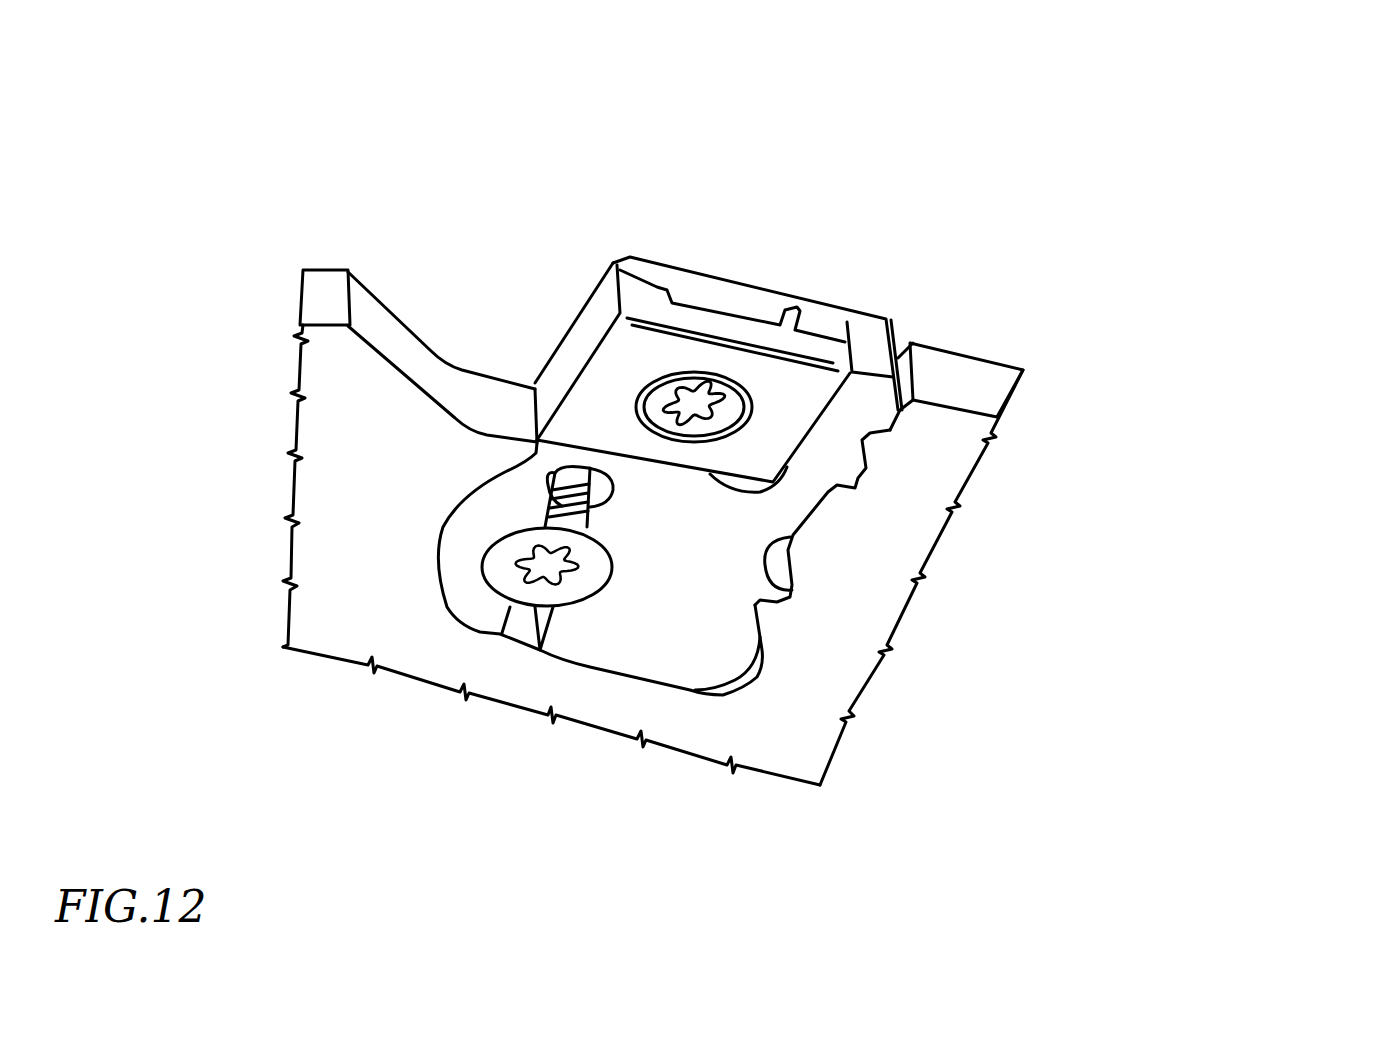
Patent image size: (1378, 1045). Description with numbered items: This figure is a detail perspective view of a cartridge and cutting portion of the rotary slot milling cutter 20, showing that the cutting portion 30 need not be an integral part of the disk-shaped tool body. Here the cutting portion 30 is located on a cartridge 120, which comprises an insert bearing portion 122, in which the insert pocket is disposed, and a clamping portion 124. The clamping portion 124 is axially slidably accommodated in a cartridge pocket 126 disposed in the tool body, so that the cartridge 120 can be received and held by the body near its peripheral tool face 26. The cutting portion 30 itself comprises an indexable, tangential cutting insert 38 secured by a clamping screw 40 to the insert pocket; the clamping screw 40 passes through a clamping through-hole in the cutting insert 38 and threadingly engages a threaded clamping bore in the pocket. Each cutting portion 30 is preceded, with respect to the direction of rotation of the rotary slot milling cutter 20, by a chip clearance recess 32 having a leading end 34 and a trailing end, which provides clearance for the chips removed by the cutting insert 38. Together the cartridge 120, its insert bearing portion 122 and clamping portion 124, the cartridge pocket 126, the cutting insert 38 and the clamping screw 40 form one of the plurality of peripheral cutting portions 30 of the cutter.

The rotary slot milling cutter 20 is at (1277, 220).
The peripheral tool face 26 is at (973, 387).
The cutting portion 30 is at (867, 577).
The chip clearance recess 32 is at (495, 357).
The leading end 34 is at (387, 337).
The cutting insert 38 is at (634, 360).
The clamping screw 40 is at (693, 403).
The cartridge 120 is at (587, 632).
The insert bearing portion 122 is at (800, 600).
The clamping portion 124 is at (668, 620).
The cartridge pocket 126 is at (832, 446).